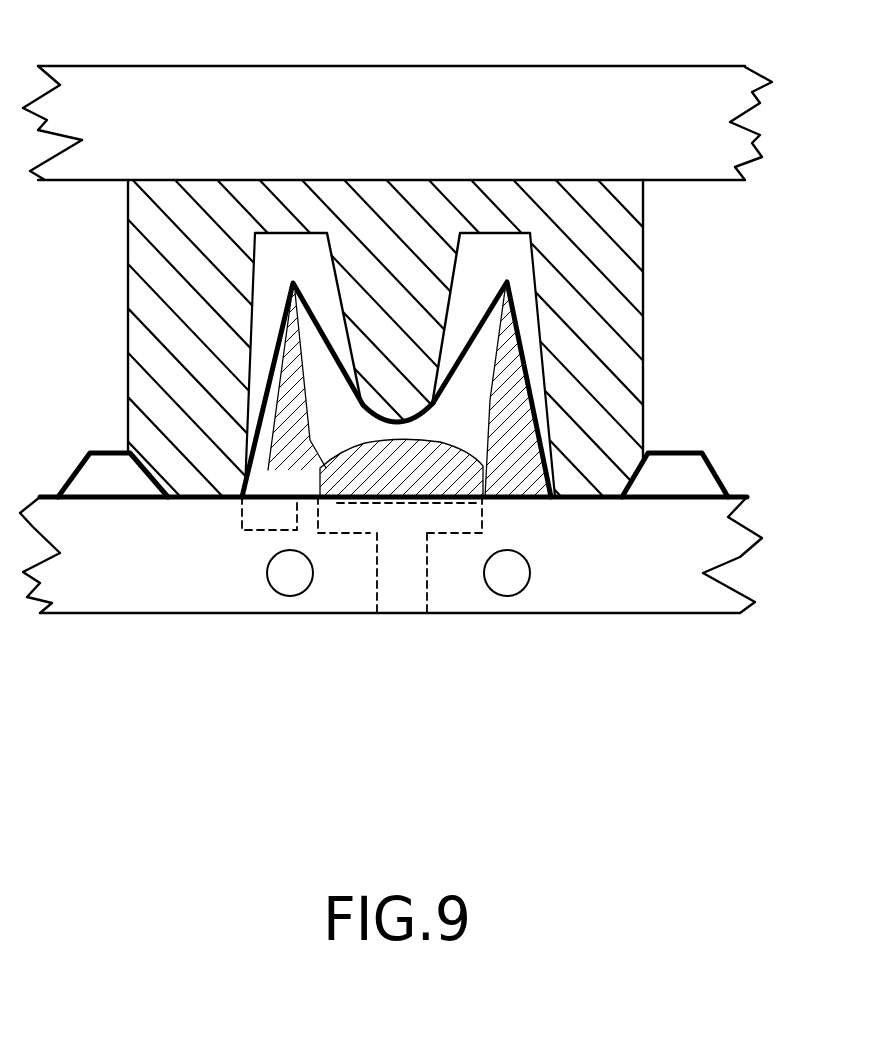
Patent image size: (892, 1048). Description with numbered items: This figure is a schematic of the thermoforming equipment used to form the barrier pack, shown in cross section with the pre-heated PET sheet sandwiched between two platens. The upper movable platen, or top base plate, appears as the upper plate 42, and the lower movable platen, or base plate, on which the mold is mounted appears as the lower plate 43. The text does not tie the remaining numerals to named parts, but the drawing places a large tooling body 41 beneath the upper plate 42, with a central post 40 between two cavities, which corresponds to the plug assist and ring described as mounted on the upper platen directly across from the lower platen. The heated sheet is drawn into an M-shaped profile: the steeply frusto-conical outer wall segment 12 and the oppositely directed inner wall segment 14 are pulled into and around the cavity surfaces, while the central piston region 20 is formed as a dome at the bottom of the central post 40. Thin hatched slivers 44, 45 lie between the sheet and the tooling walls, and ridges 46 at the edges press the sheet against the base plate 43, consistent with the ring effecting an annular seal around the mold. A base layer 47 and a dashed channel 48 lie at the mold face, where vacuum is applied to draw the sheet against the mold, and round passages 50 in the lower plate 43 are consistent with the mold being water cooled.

The outer wall segment 12 is at (523, 337).
The inner wall segment 14 is at (347, 378).
The central piston region 20 is at (447, 456).
The center post of die block 40 is at (395, 297).
The die block 41 is at (608, 347).
The upper platen 42 is at (733, 160).
The lower platen 43 is at (717, 552).
The left filler sliver 44 is at (322, 440).
The right filler sliver 45 is at (508, 283).
The clamping ridge 46 is at (722, 472).
The base conductor layer 47 is at (380, 470).
The channel 48 is at (403, 570).
The cooling passage 50 is at (282, 578).